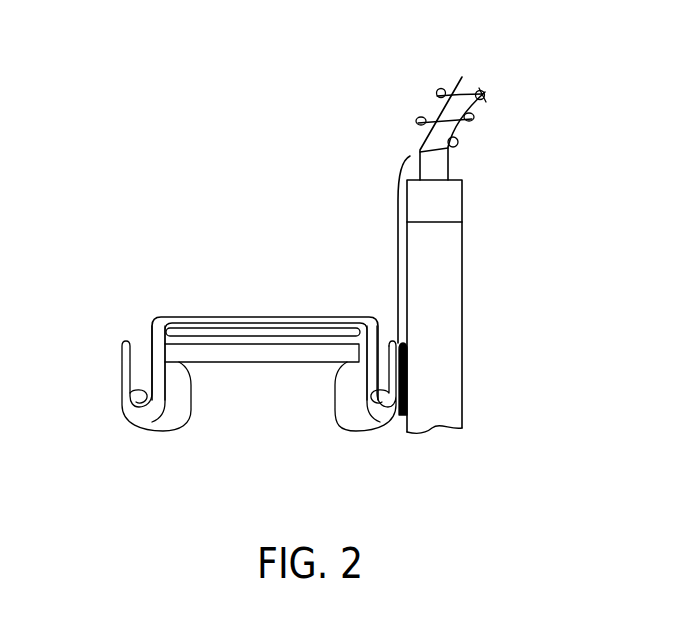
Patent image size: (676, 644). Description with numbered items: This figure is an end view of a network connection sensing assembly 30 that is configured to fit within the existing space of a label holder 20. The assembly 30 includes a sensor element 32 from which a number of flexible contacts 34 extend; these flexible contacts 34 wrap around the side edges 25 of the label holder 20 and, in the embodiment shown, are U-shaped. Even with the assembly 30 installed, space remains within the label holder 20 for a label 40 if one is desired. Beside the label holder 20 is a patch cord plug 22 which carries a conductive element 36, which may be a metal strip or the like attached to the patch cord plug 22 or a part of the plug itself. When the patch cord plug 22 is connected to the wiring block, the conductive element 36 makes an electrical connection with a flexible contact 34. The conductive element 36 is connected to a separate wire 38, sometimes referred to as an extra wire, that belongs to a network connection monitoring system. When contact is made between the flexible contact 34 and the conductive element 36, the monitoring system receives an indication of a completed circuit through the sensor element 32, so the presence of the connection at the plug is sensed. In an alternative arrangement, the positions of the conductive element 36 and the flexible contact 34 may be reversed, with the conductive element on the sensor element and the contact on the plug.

The label holder 20 is at (173, 305).
The patch cord plug 22 is at (463, 317).
The side edges 25 is at (147, 325).
The network connection sensing assembly 30 is at (242, 425).
The sensor element 32 is at (271, 352).
The flexible contacts 34 is at (140, 430).
The conductive element 36 is at (402, 418).
The separate wire 38 is at (410, 157).
The label 40 is at (297, 330).